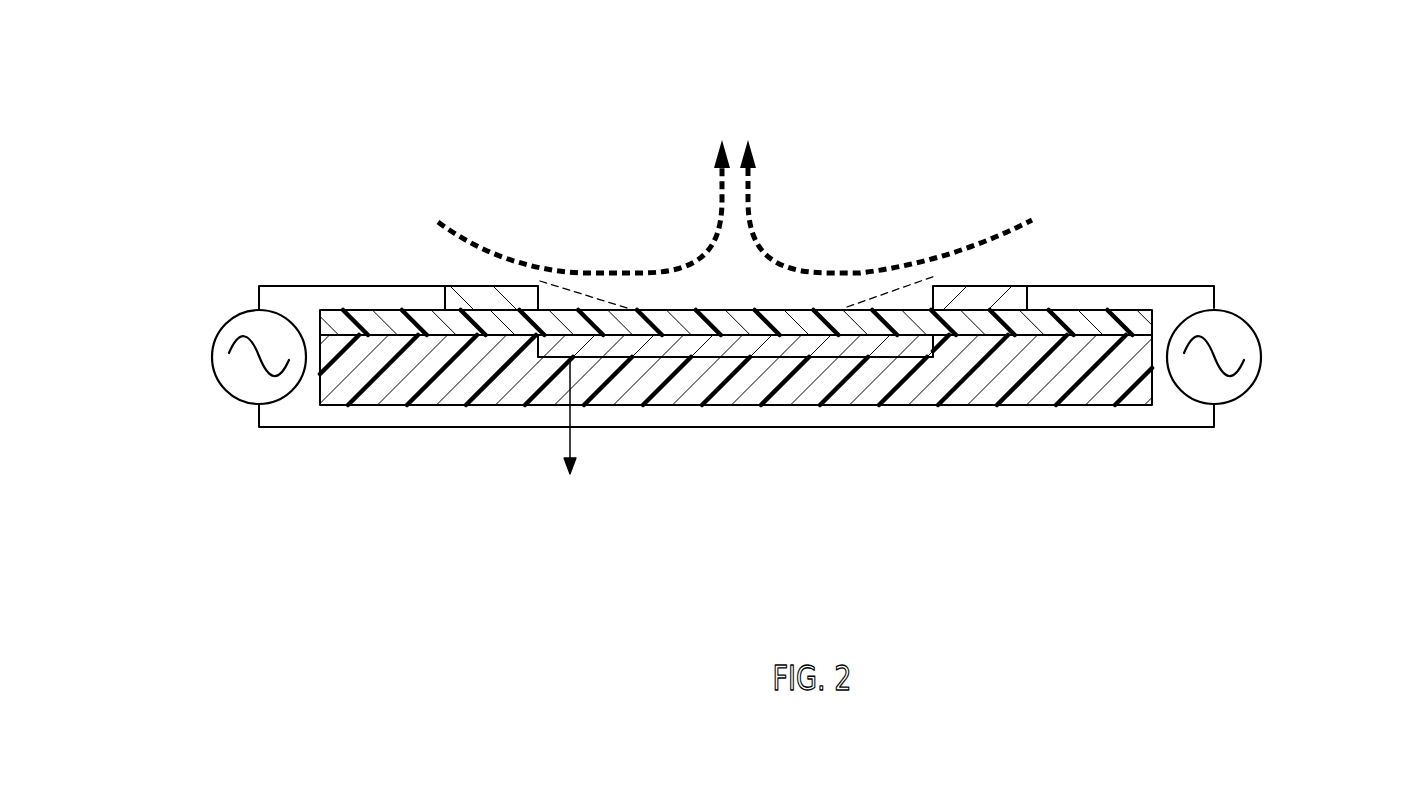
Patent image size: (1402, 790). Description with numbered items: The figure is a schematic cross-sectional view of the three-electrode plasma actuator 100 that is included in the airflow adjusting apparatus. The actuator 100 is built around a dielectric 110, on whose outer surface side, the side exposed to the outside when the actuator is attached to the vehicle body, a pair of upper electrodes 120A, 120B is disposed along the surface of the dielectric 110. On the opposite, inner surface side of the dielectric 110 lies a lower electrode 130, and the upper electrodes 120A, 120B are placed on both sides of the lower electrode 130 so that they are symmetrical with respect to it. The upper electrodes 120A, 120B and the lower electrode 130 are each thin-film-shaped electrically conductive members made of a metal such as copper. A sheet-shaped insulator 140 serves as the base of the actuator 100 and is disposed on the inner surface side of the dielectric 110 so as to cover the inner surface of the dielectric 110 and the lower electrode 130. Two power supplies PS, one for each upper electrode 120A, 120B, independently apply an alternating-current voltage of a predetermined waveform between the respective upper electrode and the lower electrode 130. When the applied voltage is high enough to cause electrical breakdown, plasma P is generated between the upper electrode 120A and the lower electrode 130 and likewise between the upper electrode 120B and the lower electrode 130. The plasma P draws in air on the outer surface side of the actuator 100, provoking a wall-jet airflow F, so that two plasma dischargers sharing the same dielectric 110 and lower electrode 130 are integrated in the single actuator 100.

The three-electrode plasma actuator 100 is at (378, 163).
The dielectric 110 is at (421, 312).
The upper electrode 120A is at (487, 287).
The upper electrode 120B is at (987, 285).
The lower electrode 130 is at (720, 356).
The insulator 140 is at (977, 401).
The power supply PS is at (227, 327).
The plasma P is at (883, 283).
The wall-jet airflow F is at (757, 237).